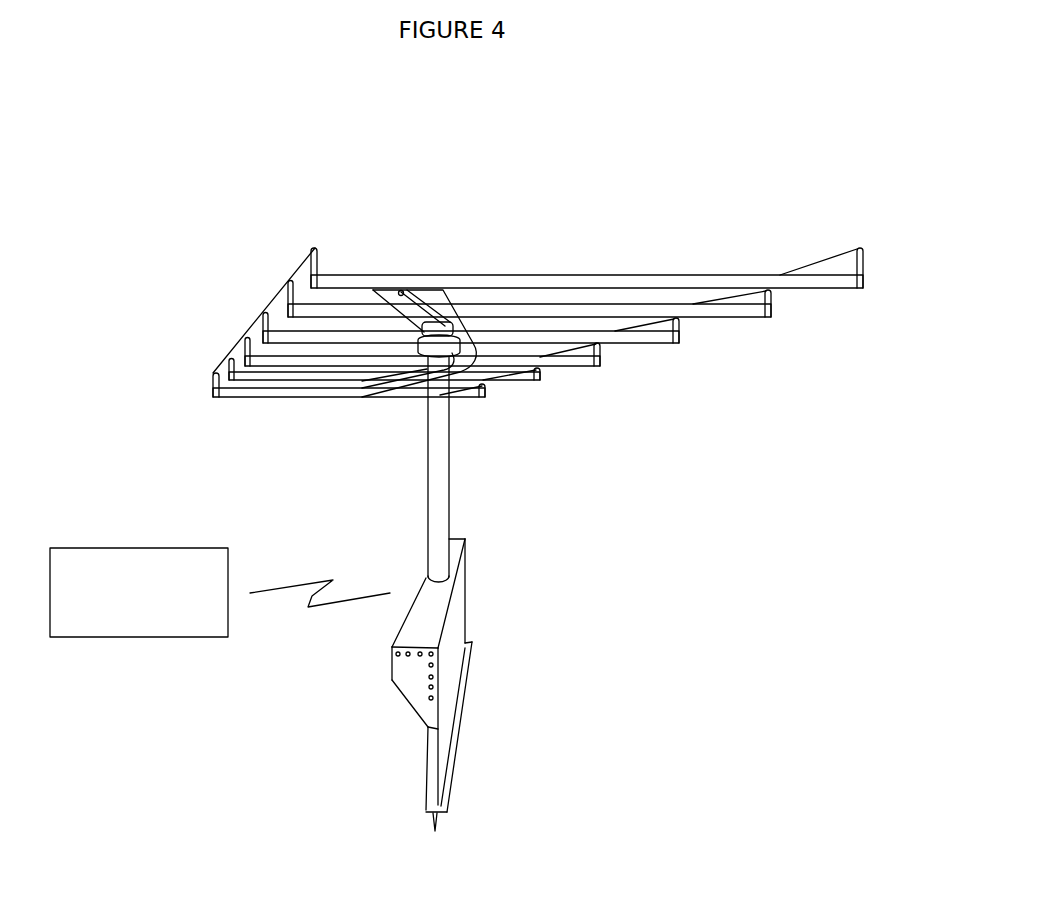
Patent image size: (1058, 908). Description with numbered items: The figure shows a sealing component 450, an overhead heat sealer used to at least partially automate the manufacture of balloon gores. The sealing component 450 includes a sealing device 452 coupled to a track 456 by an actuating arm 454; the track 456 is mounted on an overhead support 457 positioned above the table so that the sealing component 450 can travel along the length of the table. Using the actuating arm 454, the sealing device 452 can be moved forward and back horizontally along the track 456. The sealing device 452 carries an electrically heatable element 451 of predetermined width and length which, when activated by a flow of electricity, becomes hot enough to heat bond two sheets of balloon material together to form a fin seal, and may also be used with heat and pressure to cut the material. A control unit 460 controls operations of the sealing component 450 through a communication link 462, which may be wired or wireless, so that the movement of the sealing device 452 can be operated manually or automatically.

The sealing component 450 is at (727, 188).
The heatable element 451 is at (440, 813).
The sealing device 452 is at (443, 630).
The actuating arm 454 is at (443, 450).
The track 456 is at (529, 316).
The overhead support 457 is at (310, 272).
The control unit 460 is at (140, 548).
The communication link 462 is at (293, 585).